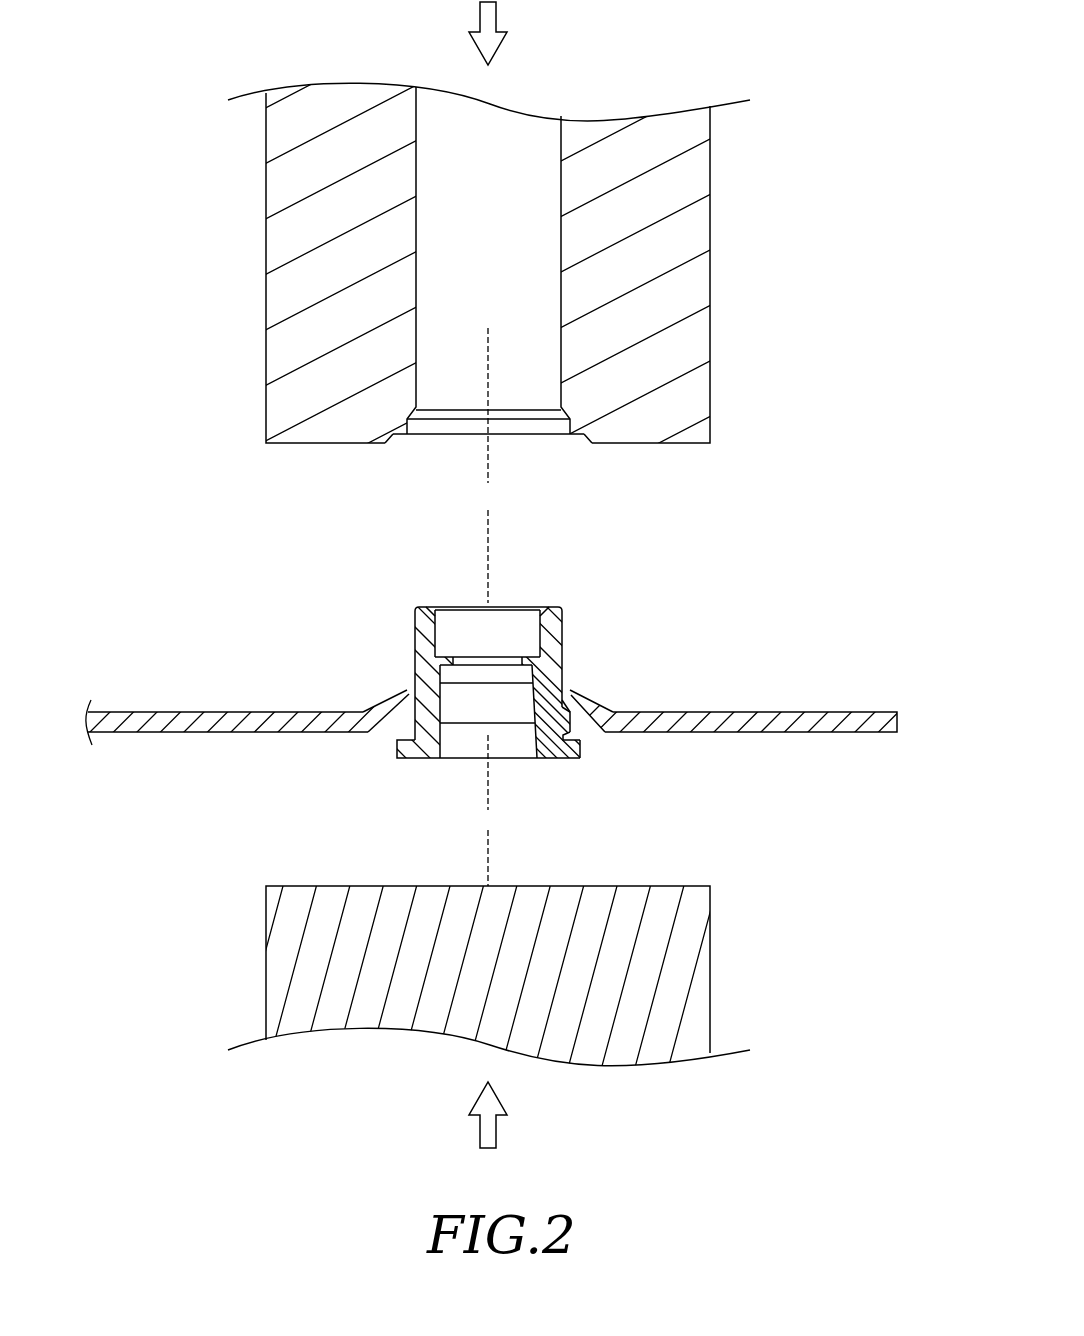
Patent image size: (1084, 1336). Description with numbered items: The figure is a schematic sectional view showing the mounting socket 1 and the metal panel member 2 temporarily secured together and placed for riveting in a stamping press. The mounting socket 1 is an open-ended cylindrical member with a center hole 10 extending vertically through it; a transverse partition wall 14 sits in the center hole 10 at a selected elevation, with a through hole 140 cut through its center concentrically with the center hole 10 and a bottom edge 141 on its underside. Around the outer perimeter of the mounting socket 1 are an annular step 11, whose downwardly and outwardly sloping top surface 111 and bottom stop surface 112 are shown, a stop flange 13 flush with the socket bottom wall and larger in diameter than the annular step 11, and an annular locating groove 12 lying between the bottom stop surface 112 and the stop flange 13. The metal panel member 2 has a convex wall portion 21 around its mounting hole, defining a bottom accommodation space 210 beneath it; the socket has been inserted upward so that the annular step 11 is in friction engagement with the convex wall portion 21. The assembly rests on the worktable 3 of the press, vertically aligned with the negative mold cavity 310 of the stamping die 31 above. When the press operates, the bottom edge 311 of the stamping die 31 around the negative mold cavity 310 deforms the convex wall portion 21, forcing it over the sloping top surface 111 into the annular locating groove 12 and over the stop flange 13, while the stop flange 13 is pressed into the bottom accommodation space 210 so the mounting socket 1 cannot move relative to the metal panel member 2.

The mounting socket 1 is at (548, 635).
The center hole 10 is at (462, 615).
The annular step 11 is at (575, 707).
The downwardly and outwardly sloping top surface 111 is at (572, 690).
The bottom stop surface 112 is at (569, 752).
The annular locating groove 12 is at (576, 737).
The stop flange 13 is at (408, 753).
The transverse partition wall 14 is at (418, 640).
The through hole 140 is at (458, 652).
The bottom edge 141 is at (440, 673).
The metal panel member 2 is at (823, 722).
The convex wall portion 21 is at (382, 703).
The bottom accommodation space 210 is at (387, 726).
The worktable 3 is at (300, 895).
The stamping die 31 is at (283, 326).
The negative mold cavity 310 is at (418, 387).
The bottom edge 311 is at (586, 444).